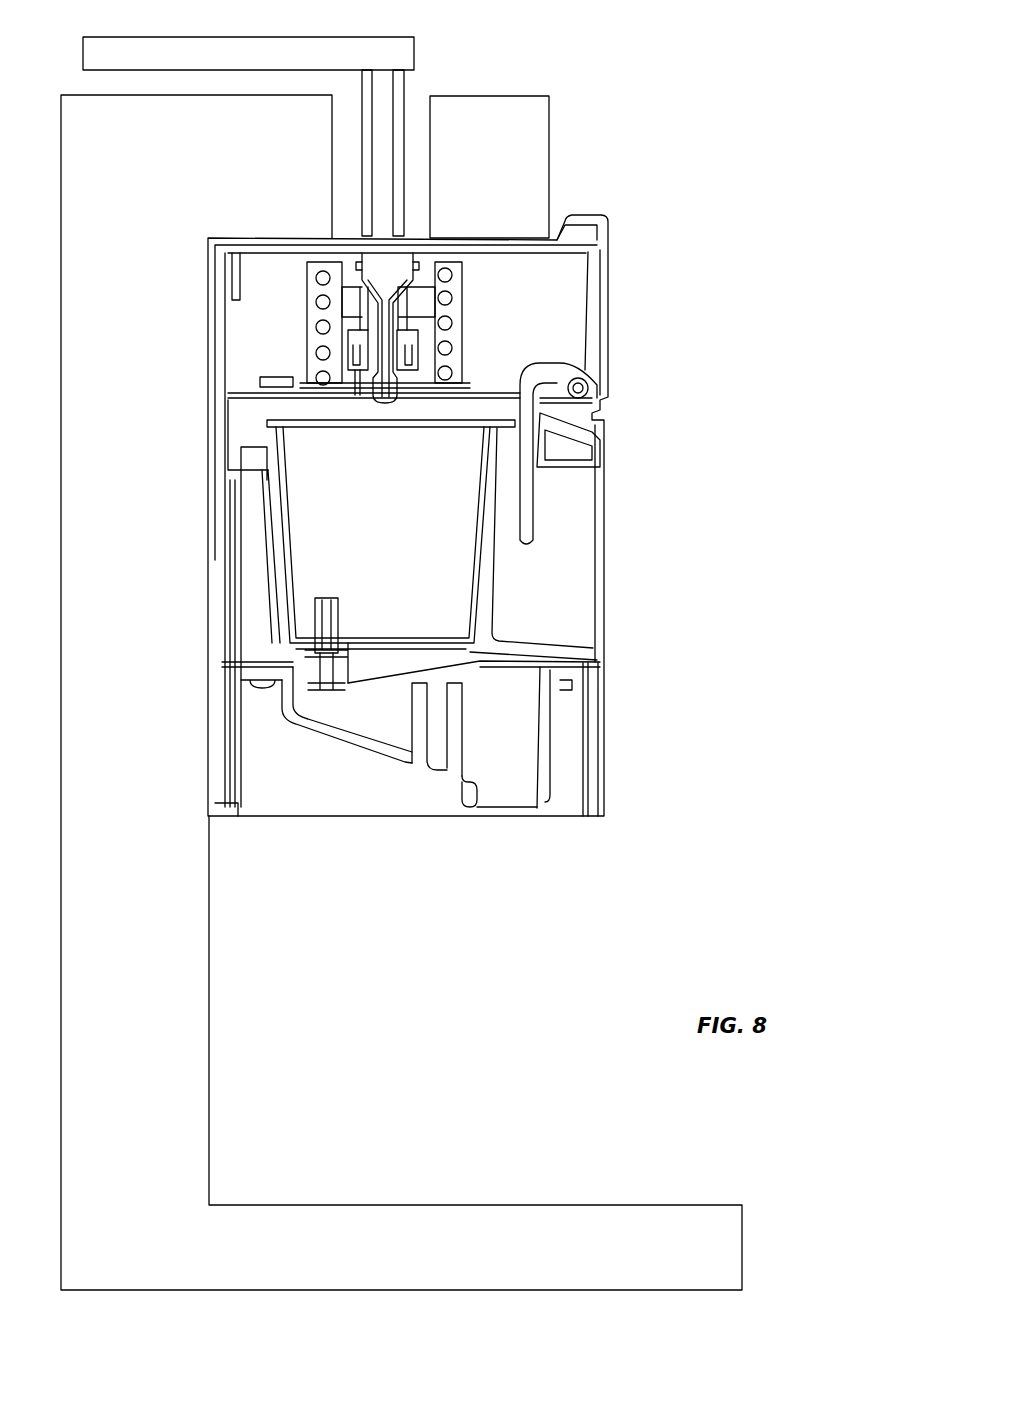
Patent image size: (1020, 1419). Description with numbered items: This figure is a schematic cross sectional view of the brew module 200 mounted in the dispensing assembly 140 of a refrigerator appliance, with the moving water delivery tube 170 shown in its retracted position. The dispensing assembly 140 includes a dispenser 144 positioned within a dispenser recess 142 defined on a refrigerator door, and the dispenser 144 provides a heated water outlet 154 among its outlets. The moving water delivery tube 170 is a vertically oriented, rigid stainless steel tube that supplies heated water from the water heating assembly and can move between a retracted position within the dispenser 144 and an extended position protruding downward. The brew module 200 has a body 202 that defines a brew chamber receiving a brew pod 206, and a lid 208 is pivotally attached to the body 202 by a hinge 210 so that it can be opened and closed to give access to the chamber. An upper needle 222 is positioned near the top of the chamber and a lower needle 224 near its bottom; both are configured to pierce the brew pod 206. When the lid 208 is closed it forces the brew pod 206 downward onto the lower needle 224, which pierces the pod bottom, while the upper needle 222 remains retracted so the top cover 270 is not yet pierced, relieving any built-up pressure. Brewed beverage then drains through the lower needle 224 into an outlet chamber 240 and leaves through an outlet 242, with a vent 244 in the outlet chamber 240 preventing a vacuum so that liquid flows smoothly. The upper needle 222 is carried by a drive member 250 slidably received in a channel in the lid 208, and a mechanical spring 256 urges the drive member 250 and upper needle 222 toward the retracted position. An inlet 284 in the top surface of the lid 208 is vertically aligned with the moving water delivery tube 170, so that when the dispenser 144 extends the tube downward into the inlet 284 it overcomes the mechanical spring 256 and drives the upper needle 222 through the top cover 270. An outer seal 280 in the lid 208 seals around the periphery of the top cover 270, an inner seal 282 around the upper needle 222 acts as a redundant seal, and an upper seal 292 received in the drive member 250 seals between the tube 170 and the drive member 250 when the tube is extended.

The dispensing assembly 140 is at (695, 88).
The dispenser recess 142 is at (625, 1118).
The dispenser 144 is at (497, 118).
The heated water outlet 154 is at (385, 238).
The moving water delivery tube 170 is at (398, 182).
The brew module 200 is at (705, 430).
The body 202 is at (600, 705).
The brew pod 206 is at (400, 540).
The lid 208 is at (601, 298).
The hinge 210 is at (582, 388).
The upper needle 222 is at (357, 403).
The lower needle 224 is at (330, 610).
The outlet chamber 240 is at (383, 708).
The outlet 242 is at (513, 790).
The vent 244 is at (440, 720).
The drive member 250 is at (415, 252).
The mechanical spring 256 is at (447, 297).
The top cover 270 is at (285, 392).
The outer seal 280 is at (310, 420).
The inner seal 282 is at (407, 340).
The inlet 284 is at (378, 260).
The upper seal 292 is at (360, 265).